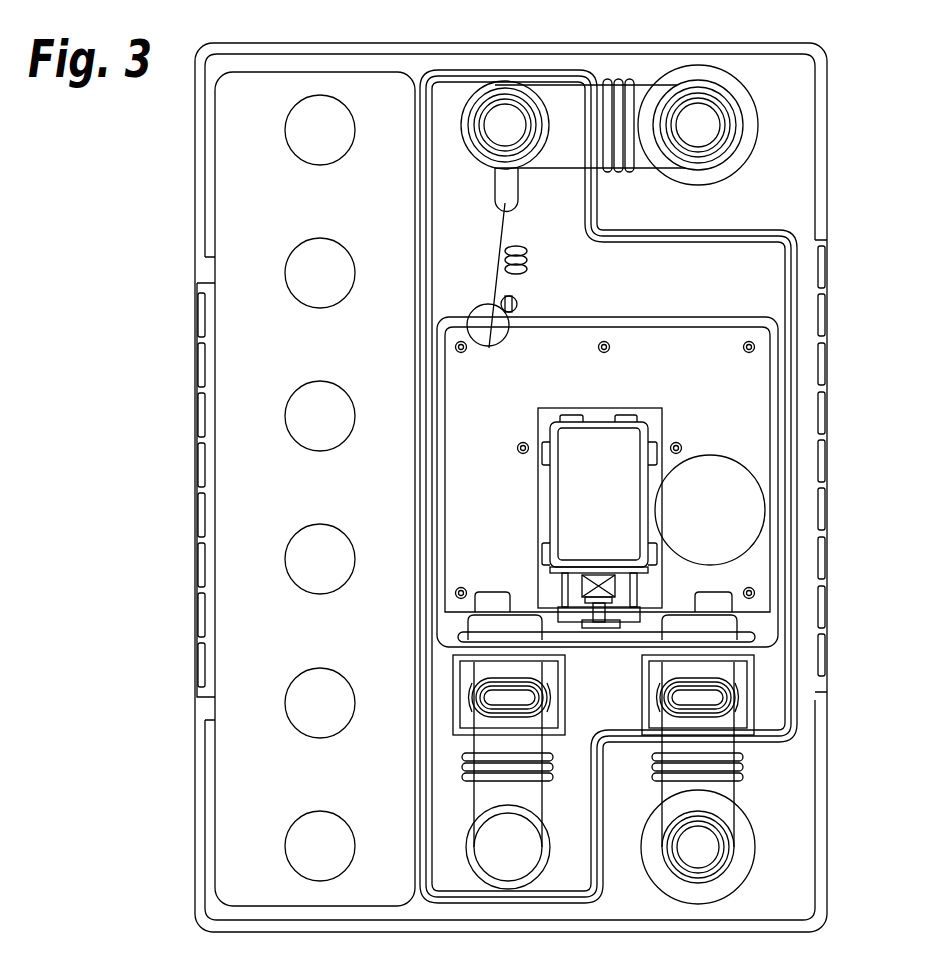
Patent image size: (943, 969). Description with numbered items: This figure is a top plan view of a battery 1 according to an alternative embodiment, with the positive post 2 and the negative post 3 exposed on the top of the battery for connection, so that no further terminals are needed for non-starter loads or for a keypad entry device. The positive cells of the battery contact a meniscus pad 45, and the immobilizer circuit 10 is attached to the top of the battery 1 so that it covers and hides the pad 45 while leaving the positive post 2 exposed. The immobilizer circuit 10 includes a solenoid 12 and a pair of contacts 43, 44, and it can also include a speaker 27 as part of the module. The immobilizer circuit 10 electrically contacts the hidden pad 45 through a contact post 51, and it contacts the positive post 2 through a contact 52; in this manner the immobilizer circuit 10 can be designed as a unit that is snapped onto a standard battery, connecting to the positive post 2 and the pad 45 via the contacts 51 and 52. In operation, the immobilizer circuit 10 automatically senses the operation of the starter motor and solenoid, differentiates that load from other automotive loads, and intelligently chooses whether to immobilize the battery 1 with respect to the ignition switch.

The battery 1 is at (163, 644).
The positive post 2 is at (750, 848).
The negative post 3 is at (722, 90).
The immobilizer circuit 10 is at (705, 320).
The solenoid 12 is at (573, 501).
The speaker 27 is at (710, 462).
The contact 43 is at (567, 633).
The contact 44 is at (635, 633).
The meniscus pad 45 is at (485, 857).
The contact post 51 is at (490, 698).
The contact 52 is at (715, 696).